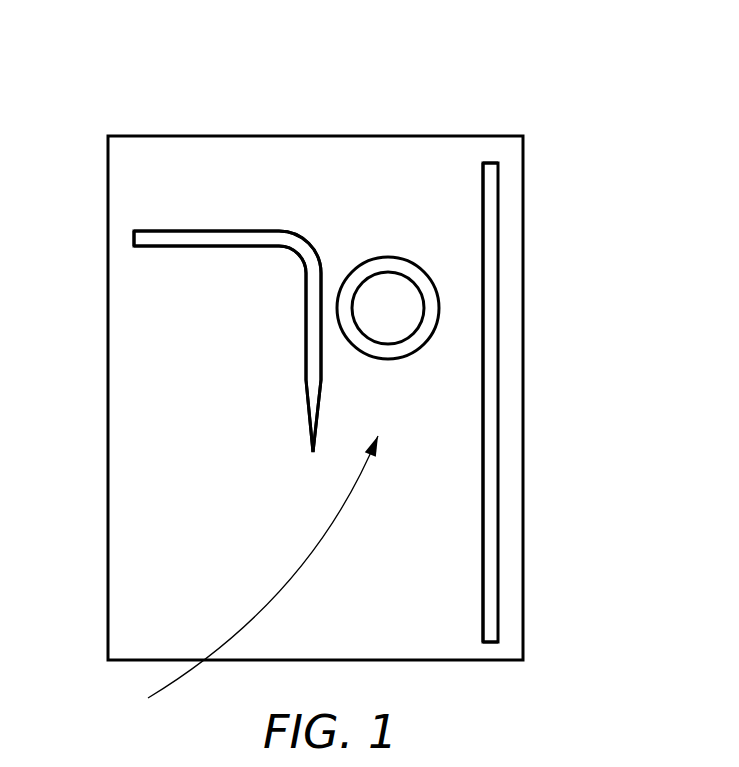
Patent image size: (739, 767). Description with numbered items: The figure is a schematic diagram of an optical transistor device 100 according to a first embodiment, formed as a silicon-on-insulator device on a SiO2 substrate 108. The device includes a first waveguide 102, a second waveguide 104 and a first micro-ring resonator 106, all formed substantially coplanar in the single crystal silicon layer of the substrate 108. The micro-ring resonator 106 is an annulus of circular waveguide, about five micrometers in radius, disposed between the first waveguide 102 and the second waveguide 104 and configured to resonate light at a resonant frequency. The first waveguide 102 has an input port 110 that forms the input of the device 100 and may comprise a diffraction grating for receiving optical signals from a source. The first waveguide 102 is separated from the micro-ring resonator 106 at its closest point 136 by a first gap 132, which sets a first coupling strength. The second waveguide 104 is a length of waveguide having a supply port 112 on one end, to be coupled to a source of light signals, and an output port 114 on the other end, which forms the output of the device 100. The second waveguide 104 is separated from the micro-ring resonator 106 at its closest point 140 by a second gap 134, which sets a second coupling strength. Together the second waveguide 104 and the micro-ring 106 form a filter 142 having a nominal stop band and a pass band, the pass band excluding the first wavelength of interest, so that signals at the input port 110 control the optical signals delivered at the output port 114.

The optical transistor device 100 is at (561, 79).
The first waveguide 102 is at (176, 257).
The second waveguide 104 is at (559, 421).
The first micro-ring resonator 106 is at (388, 257).
The SiO2 substrate 108 is at (523, 233).
The input port 110 is at (133, 230).
The supply port 112 is at (498, 167).
The output port 114 is at (498, 641).
The first gap 132 is at (328, 300).
The second gap 134 is at (458, 305).
The closest point of first waveguide 136 is at (305, 304).
The closest point of second waveguide 140 is at (490, 305).
The filter 142 is at (235, 579).